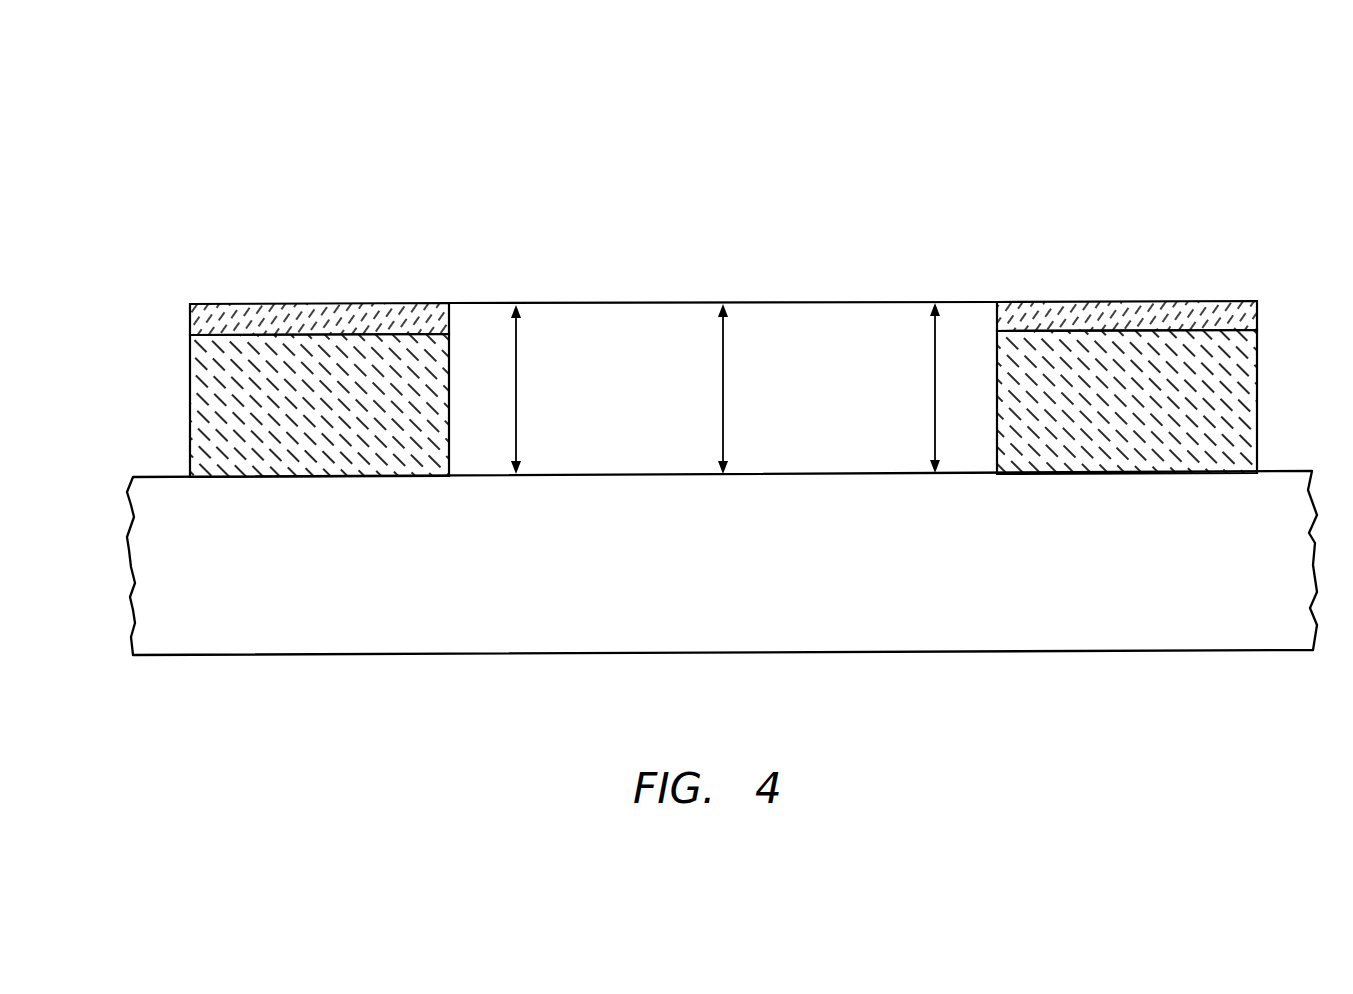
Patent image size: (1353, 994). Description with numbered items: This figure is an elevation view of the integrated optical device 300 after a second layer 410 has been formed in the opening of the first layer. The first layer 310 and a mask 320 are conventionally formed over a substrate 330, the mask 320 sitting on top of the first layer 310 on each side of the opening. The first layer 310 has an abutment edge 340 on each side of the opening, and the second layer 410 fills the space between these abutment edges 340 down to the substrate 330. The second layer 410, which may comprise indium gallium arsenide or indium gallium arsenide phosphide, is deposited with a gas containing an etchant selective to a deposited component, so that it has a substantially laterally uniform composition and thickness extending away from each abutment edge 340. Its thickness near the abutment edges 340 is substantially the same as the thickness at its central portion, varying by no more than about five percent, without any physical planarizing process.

The integrated optical device 300 is at (722, 342).
The first layer 310 is at (201, 415).
The mask 320 is at (200, 318).
The substrate 330 is at (148, 548).
The abutment edge 340 is at (462, 386).
The second layer 410 is at (617, 319).